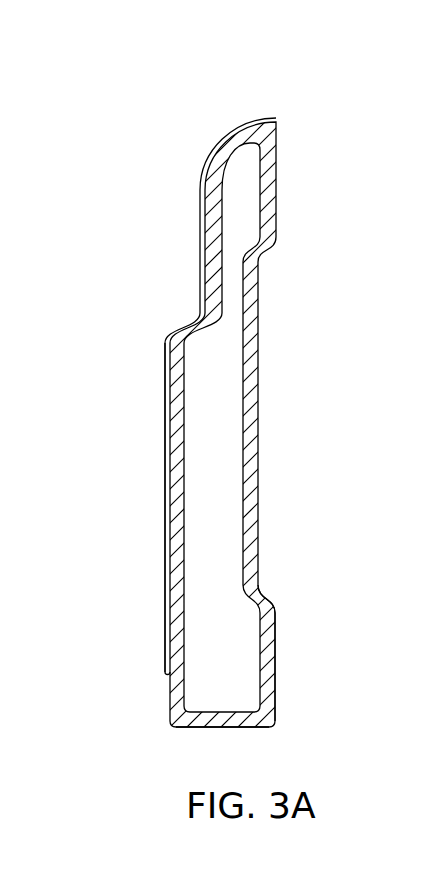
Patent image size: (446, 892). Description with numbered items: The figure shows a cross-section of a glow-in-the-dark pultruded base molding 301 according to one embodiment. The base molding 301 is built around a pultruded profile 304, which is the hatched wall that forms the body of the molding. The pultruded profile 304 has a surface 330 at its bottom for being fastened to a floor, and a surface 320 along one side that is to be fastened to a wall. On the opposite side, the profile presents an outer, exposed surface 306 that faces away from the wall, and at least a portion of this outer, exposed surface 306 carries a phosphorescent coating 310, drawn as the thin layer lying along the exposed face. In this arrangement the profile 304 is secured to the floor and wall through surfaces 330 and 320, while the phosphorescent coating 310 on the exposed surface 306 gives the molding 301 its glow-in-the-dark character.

The glow-in-the-dark pultruded base molding 301 is at (304, 328).
The pultruded profile 304 is at (252, 508).
The outer, exposed surface 306 is at (168, 460).
The phosphorescent coating 310 is at (165, 565).
The surface to be fastened to a wall 320 is at (275, 652).
The surface for being fastened to a floor 330 is at (228, 727).